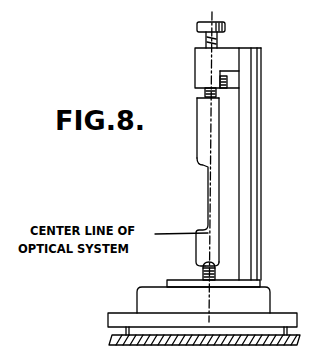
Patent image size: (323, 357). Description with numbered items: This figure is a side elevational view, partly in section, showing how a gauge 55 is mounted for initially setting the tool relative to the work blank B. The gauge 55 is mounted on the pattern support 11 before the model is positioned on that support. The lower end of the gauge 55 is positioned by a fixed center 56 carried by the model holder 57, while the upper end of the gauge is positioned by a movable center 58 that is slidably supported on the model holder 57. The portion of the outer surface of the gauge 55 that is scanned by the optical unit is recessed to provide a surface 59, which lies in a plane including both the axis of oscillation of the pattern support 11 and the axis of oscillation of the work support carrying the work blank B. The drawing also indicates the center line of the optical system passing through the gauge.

The movable center 58 is at (216, 93).
The model holder 57 is at (252, 178).
The gauge 55 is at (219, 234).
The surface 59 is at (208, 188).
The fixed center 56 is at (217, 273).
The pattern support 11 is at (262, 298).
The work blank B is at (108, 318).